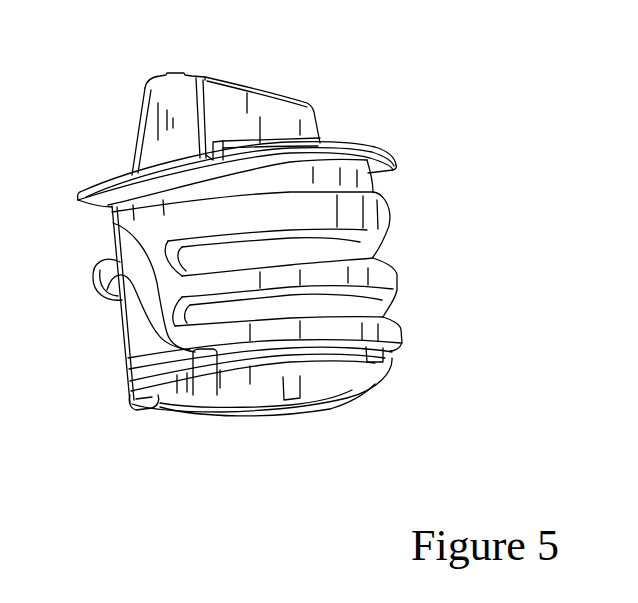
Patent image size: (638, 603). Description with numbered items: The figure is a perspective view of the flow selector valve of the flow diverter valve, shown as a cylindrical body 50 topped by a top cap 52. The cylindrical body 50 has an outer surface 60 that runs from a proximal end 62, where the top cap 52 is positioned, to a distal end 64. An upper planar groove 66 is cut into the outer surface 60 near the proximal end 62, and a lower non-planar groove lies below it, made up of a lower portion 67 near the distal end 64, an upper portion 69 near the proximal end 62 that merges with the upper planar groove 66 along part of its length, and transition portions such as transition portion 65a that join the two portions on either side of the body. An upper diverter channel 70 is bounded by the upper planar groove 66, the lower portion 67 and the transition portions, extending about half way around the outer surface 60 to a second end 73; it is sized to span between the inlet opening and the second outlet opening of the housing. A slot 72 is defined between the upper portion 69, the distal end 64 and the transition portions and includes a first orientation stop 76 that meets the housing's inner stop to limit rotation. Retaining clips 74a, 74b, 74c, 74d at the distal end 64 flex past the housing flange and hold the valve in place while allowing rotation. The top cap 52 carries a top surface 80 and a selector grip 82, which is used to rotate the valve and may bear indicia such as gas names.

The cylindrical body 50 is at (407, 292).
The top cap 52 is at (100, 152).
The outer surface 60 is at (404, 224).
The proximal end 62 is at (110, 199).
The distal end 64 is at (123, 386).
The transition portion 65a is at (146, 287).
The upper planar groove 66 is at (392, 191).
The lower portion 67 is at (398, 317).
The upper portion 69 is at (103, 238).
The upper diverter channel 70 is at (390, 259).
The slot 72 is at (123, 362).
The second end 73 is at (168, 264).
The retaining clip 74a is at (141, 420).
The retaining clip 74b is at (231, 430).
The retaining clip 74c is at (352, 408).
The retaining clip 74d is at (384, 365).
The first orientation stop 76 is at (118, 334).
The top surface 80 is at (340, 135).
The selector grip 82 is at (237, 76).